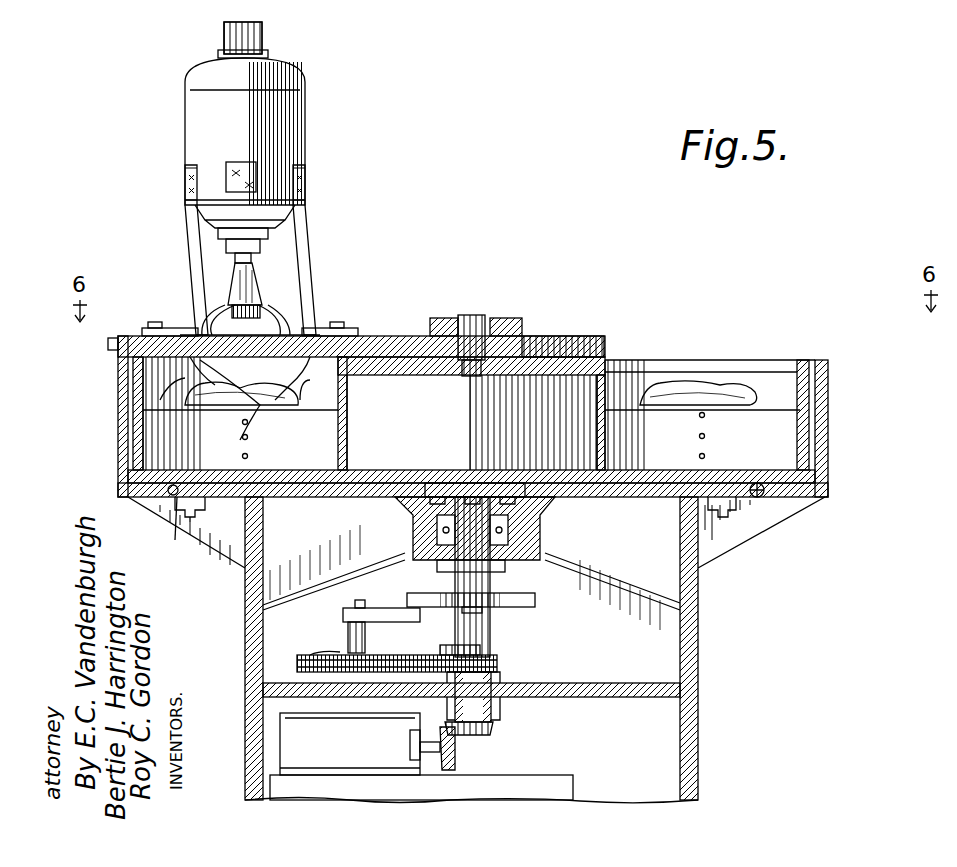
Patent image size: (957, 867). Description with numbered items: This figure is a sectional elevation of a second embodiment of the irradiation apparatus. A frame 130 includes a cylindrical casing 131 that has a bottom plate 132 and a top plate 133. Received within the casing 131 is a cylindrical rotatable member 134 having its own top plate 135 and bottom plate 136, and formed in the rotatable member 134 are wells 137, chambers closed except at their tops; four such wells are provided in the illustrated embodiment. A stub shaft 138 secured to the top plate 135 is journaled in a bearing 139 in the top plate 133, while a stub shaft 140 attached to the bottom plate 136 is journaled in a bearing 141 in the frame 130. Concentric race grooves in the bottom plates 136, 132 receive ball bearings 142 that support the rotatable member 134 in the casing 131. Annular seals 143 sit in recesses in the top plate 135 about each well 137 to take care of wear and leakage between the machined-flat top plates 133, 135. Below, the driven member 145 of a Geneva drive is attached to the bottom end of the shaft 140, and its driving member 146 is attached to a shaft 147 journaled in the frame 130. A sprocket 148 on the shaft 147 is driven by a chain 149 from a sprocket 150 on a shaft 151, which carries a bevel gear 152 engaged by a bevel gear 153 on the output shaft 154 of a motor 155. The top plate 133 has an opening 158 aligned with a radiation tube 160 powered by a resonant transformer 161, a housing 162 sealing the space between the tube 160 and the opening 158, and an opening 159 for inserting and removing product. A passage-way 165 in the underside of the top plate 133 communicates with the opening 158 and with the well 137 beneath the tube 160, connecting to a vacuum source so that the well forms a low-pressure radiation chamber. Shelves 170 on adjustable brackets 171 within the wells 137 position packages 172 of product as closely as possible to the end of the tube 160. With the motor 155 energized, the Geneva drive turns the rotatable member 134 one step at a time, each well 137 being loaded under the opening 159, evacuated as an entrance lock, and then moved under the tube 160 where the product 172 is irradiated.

The frame 130 is at (841, 436).
The cylindrical casing 131 is at (830, 458).
The bottom plate 132 is at (790, 520).
The top plate 133 is at (560, 340).
The cylindrical rotatable member 134 is at (820, 415).
The top plate 135 is at (585, 358).
The bottom plate 136 is at (830, 487).
The wells 137 is at (468, 444).
The stub shaft 138 is at (470, 315).
The bearing 139 is at (500, 335).
The stub shaft 140 is at (490, 582).
The bearing 141 is at (540, 525).
The ball bearings 142 is at (757, 483).
The annular seals 143 is at (612, 372).
The driven member 145 is at (540, 600).
The driving member 146 is at (372, 612).
The shaft 147 is at (366, 641).
The sprocket 148 is at (310, 655).
The chain 149 is at (440, 642).
The sprocket 150 is at (500, 660).
The shaft 151 is at (490, 680).
The bevel gear 152 is at (495, 731).
The bevel gear 153 is at (455, 765).
The output shaft 154 is at (430, 748).
The motor 155 is at (350, 758).
The opening 158 is at (250, 336).
The opening 159 is at (705, 360).
The radiation tube 160 is at (258, 290).
The resonant transformer 161 is at (305, 148).
The housing 162 is at (262, 318).
The second passage-way 165 is at (355, 385).
The shelves 170 is at (635, 385).
The adjustable brackets 171 is at (419, 417).
The packages 172 is at (720, 388).